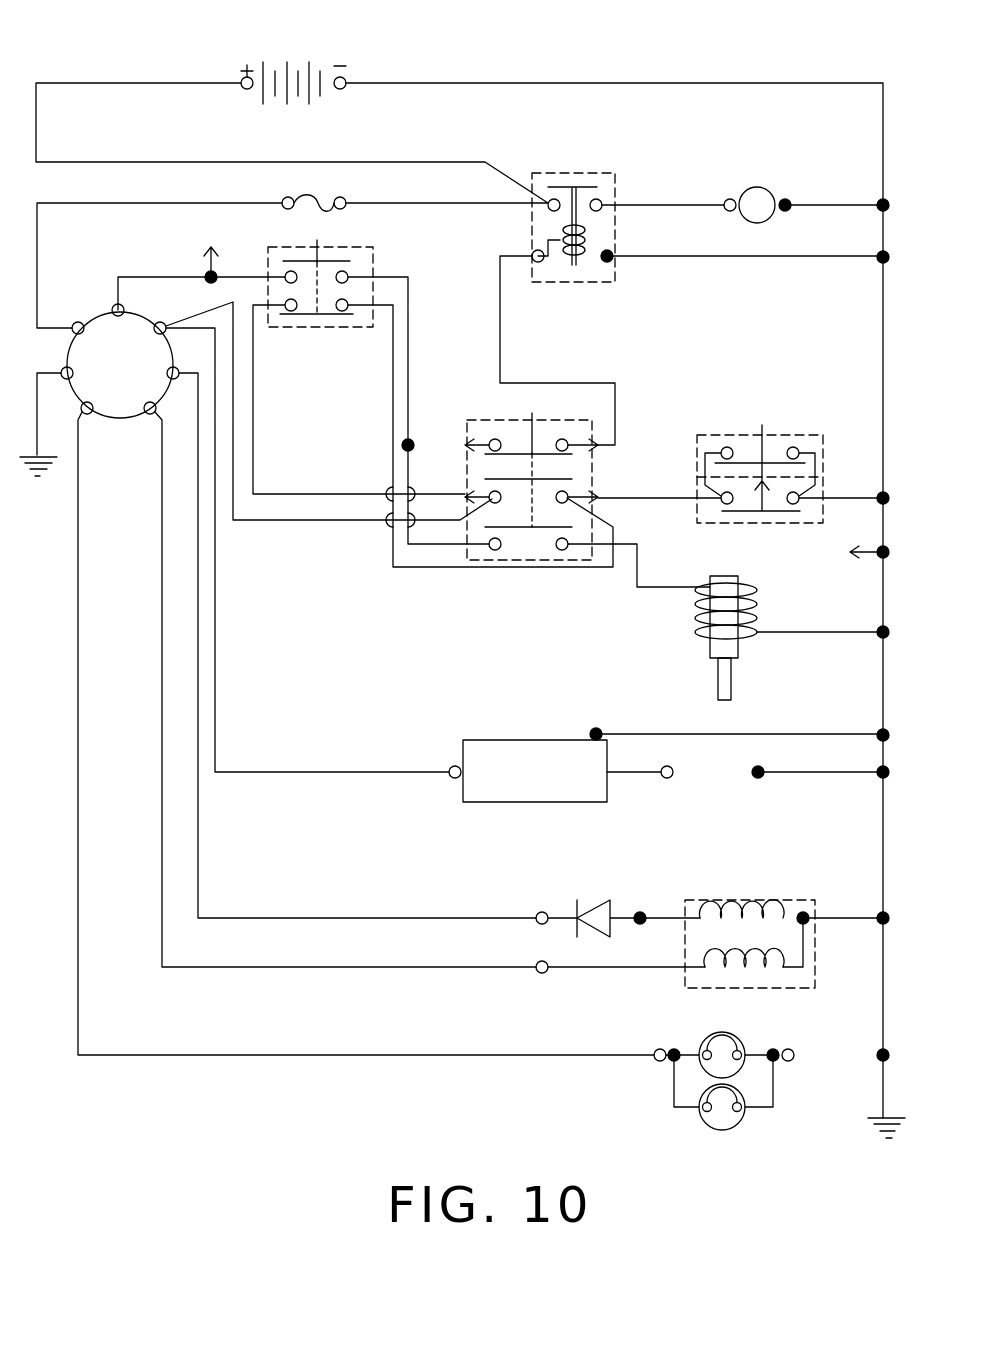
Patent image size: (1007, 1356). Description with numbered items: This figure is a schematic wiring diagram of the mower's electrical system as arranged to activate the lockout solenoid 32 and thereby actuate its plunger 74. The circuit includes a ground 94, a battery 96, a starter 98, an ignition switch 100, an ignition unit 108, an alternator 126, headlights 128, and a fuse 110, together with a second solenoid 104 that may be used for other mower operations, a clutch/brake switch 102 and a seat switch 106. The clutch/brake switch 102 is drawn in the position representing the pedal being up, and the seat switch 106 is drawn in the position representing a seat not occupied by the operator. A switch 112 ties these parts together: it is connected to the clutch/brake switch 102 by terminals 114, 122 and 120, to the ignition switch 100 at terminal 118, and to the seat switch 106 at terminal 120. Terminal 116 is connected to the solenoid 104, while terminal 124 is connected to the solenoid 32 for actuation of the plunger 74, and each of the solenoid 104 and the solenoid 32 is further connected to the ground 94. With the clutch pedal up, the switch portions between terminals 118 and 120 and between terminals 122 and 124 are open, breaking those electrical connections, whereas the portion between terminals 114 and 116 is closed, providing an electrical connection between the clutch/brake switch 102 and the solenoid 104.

The battery 96 is at (297, 68).
The starter 98 is at (757, 187).
The ignition switch 100 is at (122, 412).
The clutch/brake switch 102 is at (343, 250).
The solenoid 104 is at (606, 182).
The seat switch 106 is at (780, 437).
The ignition unit 108 is at (510, 792).
The fuse 110 is at (322, 197).
The switch 112 is at (537, 552).
The terminal 114 is at (495, 440).
The terminal 116 is at (562, 440).
The terminal 118 is at (493, 494).
The terminal 120 is at (570, 493).
The terminal 122 is at (493, 552).
The terminal 124 is at (565, 552).
The alternator 126 is at (755, 945).
The headlights 128 is at (688, 1088).
The solenoid 32 is at (728, 583).
The plunger 74 is at (728, 685).
The ground 94 is at (31, 470).